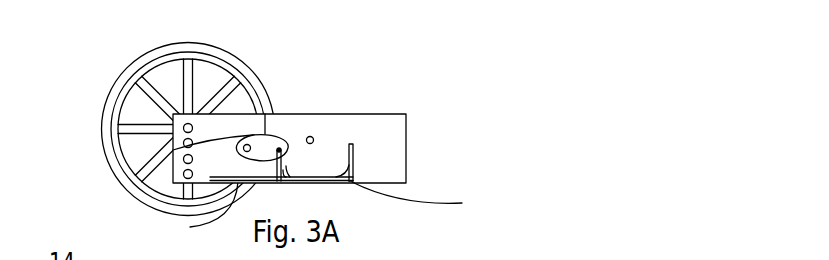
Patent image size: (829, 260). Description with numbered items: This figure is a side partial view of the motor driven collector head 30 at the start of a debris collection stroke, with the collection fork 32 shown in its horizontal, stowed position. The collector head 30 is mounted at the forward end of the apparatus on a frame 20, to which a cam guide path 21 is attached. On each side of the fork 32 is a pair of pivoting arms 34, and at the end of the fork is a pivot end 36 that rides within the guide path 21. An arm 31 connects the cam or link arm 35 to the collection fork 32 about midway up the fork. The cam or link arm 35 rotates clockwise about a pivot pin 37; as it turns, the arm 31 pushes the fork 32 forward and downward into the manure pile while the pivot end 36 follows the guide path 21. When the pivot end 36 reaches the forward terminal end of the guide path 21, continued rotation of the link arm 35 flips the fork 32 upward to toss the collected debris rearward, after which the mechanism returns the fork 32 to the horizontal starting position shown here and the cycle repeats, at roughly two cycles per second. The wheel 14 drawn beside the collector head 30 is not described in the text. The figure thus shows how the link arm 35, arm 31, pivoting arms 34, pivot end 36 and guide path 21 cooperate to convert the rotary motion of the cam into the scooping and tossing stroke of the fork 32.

The wheel 14 is at (146, 53).
The cam or link arm 35 is at (272, 114).
The collection fork 32 is at (190, 227).
The frame 20 is at (380, 113).
The pivot pin 37 is at (173, 148).
The arm 31 is at (279, 150).
The collector head 30 is at (321, 153).
The pivot end 36 is at (352, 144).
The pivoting arms 34 is at (420, 201).
The cam guide path 21 is at (352, 182).